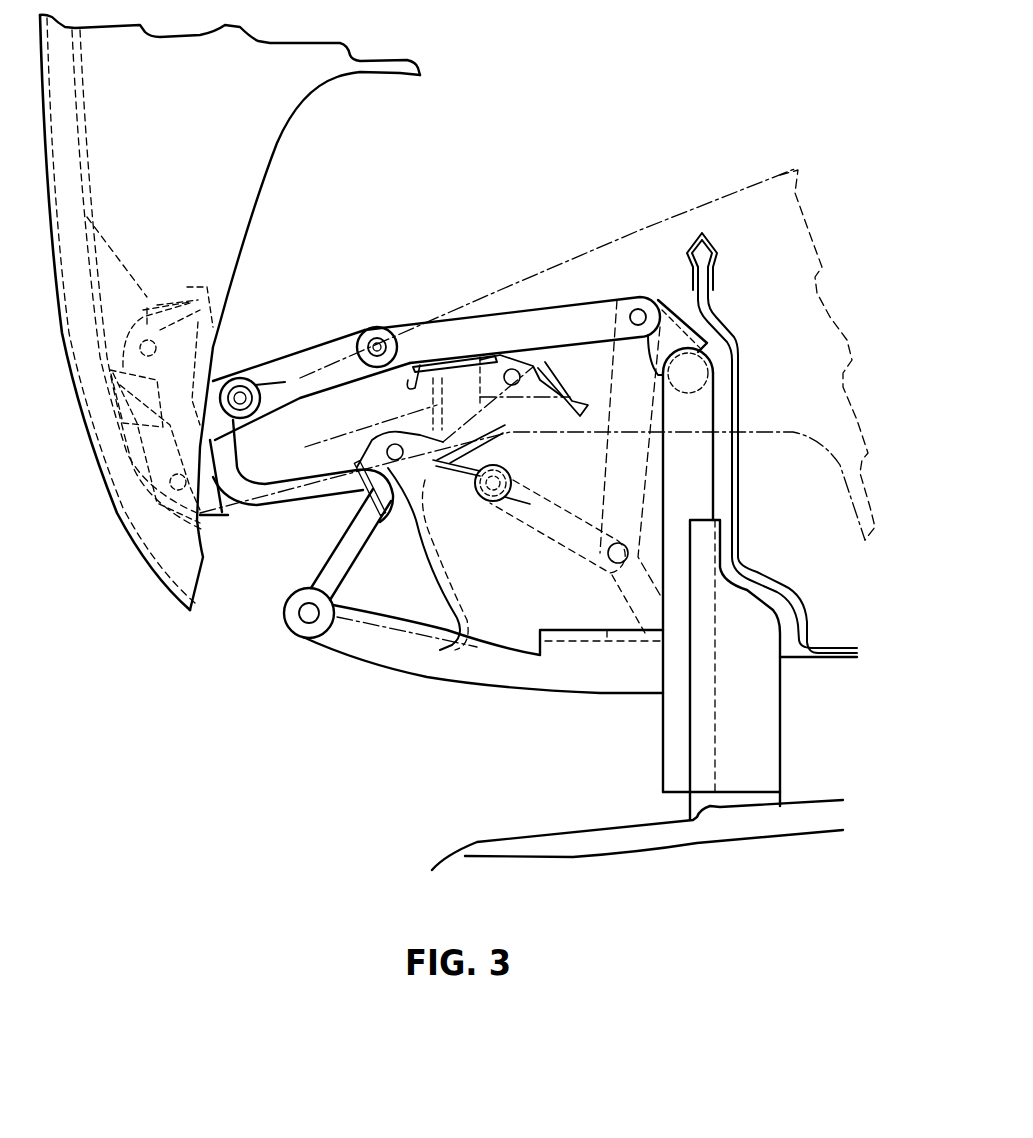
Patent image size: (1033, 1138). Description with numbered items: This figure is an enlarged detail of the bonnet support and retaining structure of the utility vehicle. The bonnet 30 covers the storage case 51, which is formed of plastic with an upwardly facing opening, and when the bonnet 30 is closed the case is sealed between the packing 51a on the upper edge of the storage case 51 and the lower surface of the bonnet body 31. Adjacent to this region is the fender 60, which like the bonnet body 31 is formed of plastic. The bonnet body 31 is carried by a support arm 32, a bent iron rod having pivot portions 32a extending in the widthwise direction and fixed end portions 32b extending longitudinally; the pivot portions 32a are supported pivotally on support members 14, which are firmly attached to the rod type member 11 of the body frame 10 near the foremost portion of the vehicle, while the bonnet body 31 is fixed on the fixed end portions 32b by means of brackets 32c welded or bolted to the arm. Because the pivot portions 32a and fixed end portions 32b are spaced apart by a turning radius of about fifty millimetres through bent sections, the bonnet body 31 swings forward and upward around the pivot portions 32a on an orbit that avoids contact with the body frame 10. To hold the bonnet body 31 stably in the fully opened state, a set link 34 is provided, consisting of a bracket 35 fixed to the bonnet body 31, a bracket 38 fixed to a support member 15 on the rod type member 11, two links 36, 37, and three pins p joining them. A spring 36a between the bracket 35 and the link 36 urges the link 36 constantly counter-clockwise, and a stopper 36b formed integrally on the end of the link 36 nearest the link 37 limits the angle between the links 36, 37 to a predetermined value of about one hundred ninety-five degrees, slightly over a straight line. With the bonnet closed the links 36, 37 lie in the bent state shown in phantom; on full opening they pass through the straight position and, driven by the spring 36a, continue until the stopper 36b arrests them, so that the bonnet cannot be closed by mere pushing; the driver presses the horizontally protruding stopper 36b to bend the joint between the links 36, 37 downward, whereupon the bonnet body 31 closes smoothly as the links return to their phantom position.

The body frame 10 is at (818, 620).
The rod type member 11 is at (818, 663).
The support member 14 is at (497, 679).
The support member 15 is at (707, 450).
The bonnet 30 is at (152, 624).
The bonnet body 31 is at (311, 77).
The support arm 32 is at (348, 547).
The pivot portion 32a is at (308, 617).
The fixed end portion 32b is at (202, 300).
The bracket 32c is at (155, 307).
The set link 34 is at (600, 197).
The bracket 35 is at (215, 378).
The link 36 is at (320, 357).
The spring 36a is at (277, 380).
The stopper 36b is at (410, 380).
The link 37 is at (497, 323).
The bracket 38 is at (677, 307).
The storage case 51 is at (727, 327).
The packing 51a is at (717, 243).
The fender 60 is at (467, 842).
The pin p is at (377, 345).